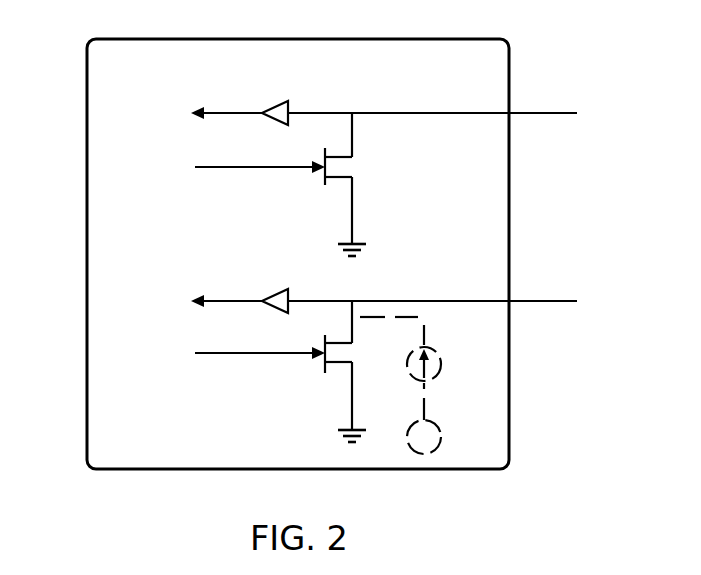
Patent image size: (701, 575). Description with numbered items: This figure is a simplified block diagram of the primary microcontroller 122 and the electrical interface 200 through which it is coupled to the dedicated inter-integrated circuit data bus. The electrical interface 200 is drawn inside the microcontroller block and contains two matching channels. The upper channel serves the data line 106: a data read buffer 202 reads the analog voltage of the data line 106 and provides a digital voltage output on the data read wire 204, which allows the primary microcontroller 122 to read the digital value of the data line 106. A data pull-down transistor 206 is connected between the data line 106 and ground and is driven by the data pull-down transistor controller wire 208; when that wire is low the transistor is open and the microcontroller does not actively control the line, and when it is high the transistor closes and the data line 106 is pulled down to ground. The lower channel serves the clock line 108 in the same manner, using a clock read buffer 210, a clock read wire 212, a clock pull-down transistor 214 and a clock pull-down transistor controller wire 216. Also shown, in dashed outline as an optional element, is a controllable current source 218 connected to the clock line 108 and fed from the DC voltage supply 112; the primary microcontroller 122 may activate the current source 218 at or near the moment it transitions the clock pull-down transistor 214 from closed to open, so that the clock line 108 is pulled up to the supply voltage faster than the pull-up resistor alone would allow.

The electrical interface 200 is at (94, 122).
The primary microcontroller 122 is at (128, 39).
The data read buffer 202 is at (288, 101).
The data read wire 204 is at (233, 111).
The data pull-down transistor 206 is at (322, 186).
The data pull-down transistor controller wire 208 is at (233, 166).
The clock read buffer 210 is at (288, 289).
The clock read wire 212 is at (233, 299).
The clock pull-down transistor 214 is at (322, 373).
The clock pull-down transistor controller wire 216 is at (233, 352).
The data line 106 is at (550, 113).
The clock line 108 is at (550, 301).
The controllable current source 218 is at (437, 355).
The DC voltage supply 112 is at (436, 425).